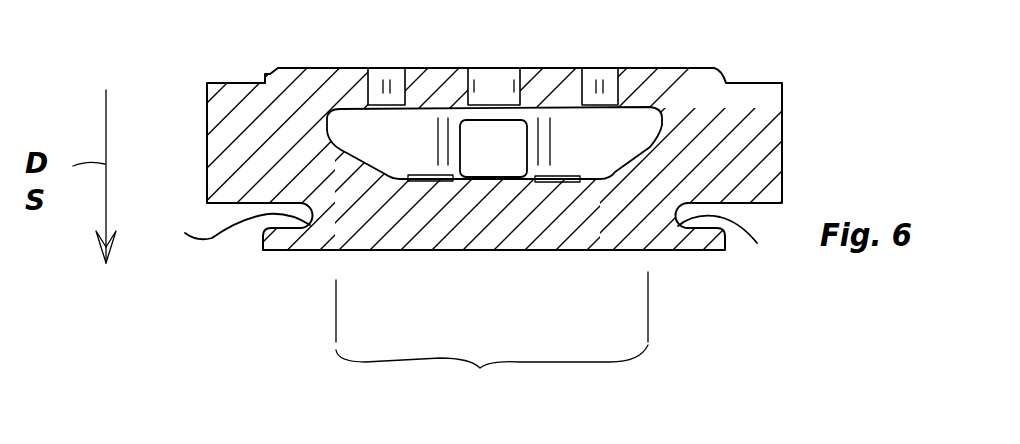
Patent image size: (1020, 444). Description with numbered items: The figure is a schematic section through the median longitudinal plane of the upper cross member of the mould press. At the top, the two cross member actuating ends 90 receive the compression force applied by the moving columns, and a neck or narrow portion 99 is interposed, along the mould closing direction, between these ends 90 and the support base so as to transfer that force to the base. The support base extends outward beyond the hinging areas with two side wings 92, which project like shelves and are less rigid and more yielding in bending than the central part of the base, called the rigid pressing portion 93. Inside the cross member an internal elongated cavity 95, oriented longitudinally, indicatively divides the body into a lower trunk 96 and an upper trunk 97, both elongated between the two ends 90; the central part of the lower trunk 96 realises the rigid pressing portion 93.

The cross member actuating ends 90 is at (207, 150).
The side wings 92 is at (277, 242).
The rigid pressing portion 93 is at (480, 368).
The internal elongated cavity 95 is at (392, 135).
The lower trunk 96 is at (520, 220).
The upper trunk 97 is at (555, 69).
The narrow portion 99 is at (467, 241).